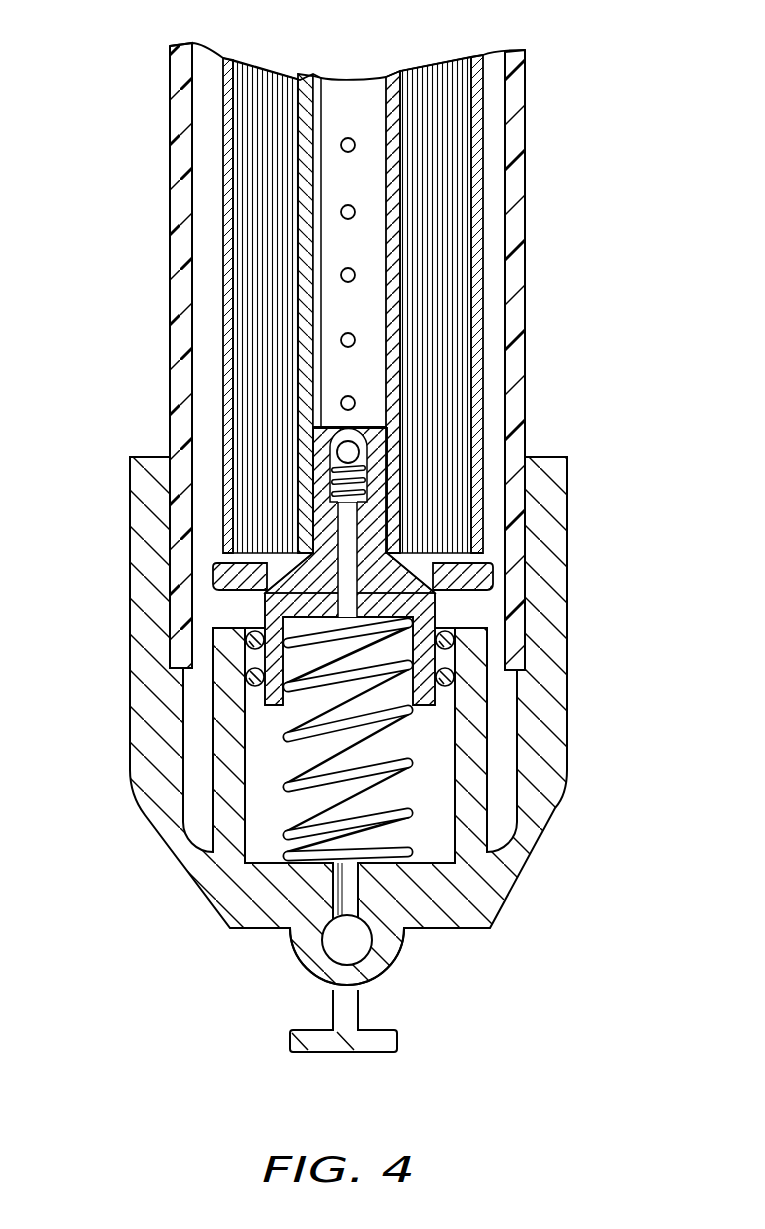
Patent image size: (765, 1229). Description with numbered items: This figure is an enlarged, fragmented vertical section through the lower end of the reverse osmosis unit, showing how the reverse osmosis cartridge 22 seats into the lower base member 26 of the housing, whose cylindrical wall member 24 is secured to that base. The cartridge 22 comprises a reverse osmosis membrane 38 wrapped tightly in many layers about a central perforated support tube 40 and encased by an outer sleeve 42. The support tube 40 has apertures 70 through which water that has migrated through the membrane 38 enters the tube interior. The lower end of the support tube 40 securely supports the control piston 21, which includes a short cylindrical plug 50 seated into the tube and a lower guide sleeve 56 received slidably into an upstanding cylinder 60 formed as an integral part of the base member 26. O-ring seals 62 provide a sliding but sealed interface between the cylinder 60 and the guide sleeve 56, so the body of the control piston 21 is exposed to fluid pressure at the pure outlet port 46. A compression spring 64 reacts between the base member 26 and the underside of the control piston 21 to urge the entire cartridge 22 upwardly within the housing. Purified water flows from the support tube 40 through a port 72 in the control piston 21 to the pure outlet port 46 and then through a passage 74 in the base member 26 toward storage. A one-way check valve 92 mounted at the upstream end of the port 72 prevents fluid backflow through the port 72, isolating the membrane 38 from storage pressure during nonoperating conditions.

The control piston 21 is at (478, 560).
The reverse osmosis cartridge 22 is at (483, 210).
The cylindrical wall member 24 is at (527, 303).
The lower base member 26 is at (553, 765).
The reverse osmosis membrane 38 is at (452, 113).
The central perforated support tube 40 is at (309, 138).
The outer sleeve 42 is at (223, 123).
The pure outlet port 46 is at (333, 952).
The short cylindrical plug 50 is at (327, 530).
The lower guide sleeve 56 is at (419, 708).
The upstanding cylinder 60 is at (477, 733).
The O-ring seals 62 is at (246, 673).
The compression spring 64 is at (283, 781).
The apertures 70 is at (347, 136).
The port 72 is at (352, 588).
The passage 74 is at (357, 953).
The one-way check valve 92 is at (327, 462).